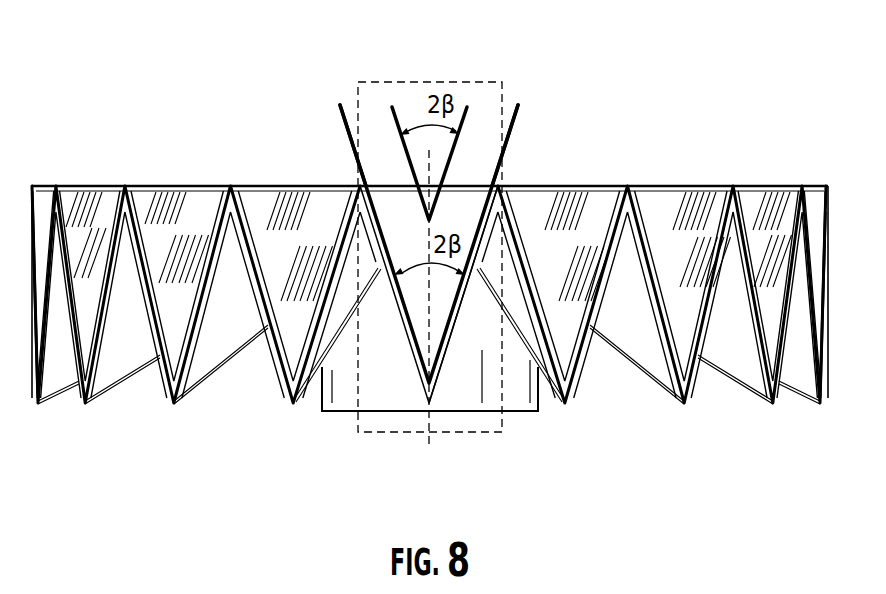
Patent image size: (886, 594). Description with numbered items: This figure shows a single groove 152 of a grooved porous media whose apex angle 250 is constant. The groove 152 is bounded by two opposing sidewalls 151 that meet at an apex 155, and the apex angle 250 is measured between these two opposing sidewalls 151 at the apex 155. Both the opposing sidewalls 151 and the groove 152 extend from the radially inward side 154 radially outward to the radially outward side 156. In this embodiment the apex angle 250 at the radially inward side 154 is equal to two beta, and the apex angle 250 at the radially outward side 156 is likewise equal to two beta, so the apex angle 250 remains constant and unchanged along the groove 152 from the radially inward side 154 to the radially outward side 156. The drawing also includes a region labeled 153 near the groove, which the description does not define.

The apex angle 250 is at (420, 258).
The opposing sidewalls 151 is at (460, 302).
The groove 152 is at (391, 228).
The peak of spring 153 is at (500, 188).
The radially inward side 154 is at (466, 121).
The apex 155 is at (432, 408).
The radially outward side 156 is at (338, 123).